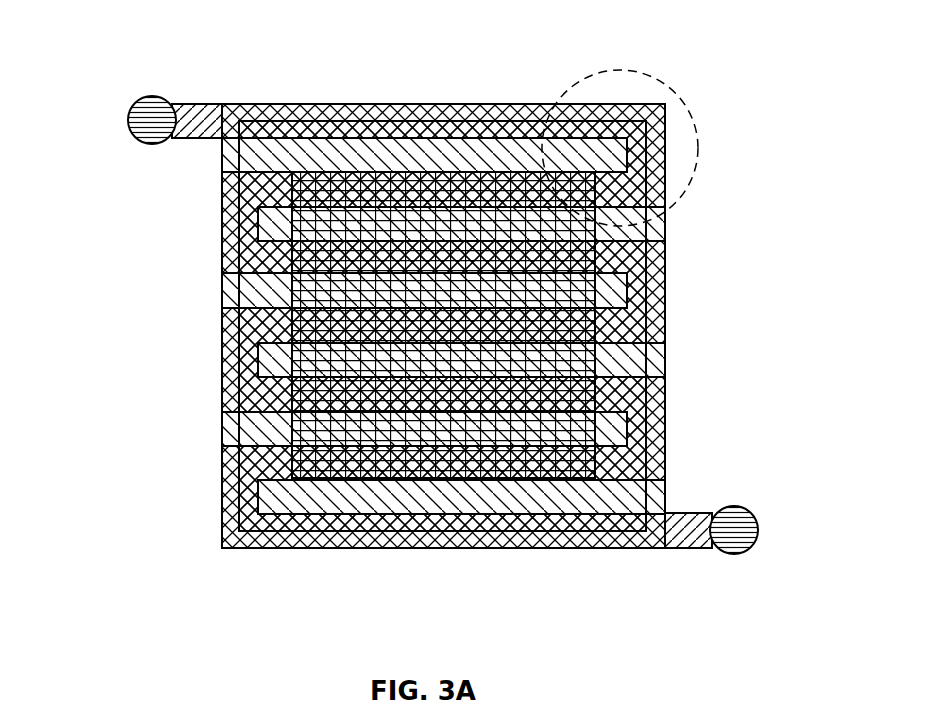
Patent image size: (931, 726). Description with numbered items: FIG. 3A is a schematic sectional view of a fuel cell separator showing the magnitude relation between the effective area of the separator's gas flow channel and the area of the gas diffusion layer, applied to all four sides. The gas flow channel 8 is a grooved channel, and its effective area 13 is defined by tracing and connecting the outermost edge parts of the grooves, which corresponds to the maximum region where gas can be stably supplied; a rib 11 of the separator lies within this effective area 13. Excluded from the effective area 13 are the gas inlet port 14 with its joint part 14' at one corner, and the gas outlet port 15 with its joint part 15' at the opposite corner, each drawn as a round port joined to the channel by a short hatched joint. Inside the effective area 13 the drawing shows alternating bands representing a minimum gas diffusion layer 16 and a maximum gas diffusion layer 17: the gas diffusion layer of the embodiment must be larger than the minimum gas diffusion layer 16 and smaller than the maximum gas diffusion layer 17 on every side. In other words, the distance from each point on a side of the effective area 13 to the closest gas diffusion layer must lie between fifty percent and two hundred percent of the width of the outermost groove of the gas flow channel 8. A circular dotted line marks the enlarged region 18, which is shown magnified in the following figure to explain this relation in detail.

The gas flow channel 8 is at (271, 113).
The rib 11 is at (650, 360).
The effective area of the gas flow channel 13 is at (397, 105).
The gas inlet port 14 is at (103, 108).
The joint part of the gas inlet port 14' is at (218, 79).
The gas outlet port 15 is at (780, 518).
The joint part of the gas outlet port 15' is at (707, 577).
The minimum gas diffusion layer 16 is at (262, 349).
The maximum gas diffusion layer 17 is at (650, 227).
The enlarged region 18 is at (678, 99).